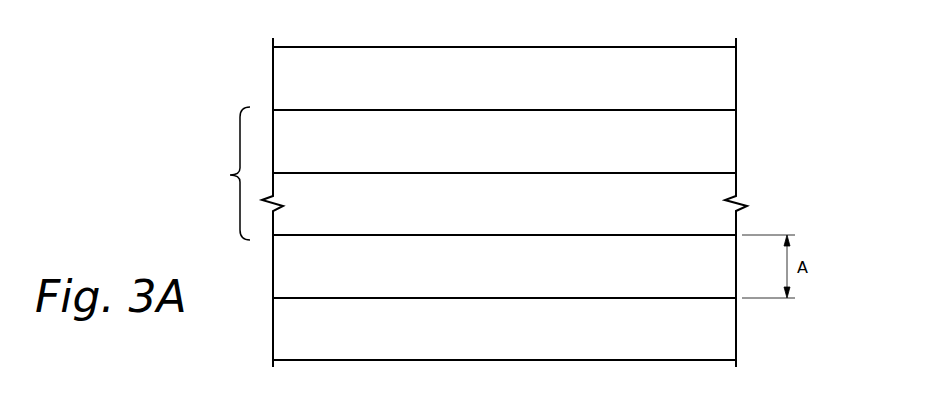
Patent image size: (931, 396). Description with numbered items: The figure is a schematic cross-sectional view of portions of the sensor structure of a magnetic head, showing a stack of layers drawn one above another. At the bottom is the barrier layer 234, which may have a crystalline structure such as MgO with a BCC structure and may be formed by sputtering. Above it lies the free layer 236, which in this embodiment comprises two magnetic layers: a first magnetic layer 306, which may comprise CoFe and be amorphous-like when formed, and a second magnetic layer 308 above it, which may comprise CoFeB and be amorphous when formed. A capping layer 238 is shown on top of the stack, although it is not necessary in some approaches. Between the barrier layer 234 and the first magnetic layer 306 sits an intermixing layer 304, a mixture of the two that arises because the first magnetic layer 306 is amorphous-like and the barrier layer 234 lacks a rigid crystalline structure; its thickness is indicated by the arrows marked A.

The capping layer 238 is at (481, 90).
The second magnetic layer 308 is at (481, 153).
The first magnetic layer 306 is at (481, 215).
The free layer 236 is at (461, 173).
The intermixing layer 304 is at (481, 278).
The barrier layer 234 is at (481, 338).